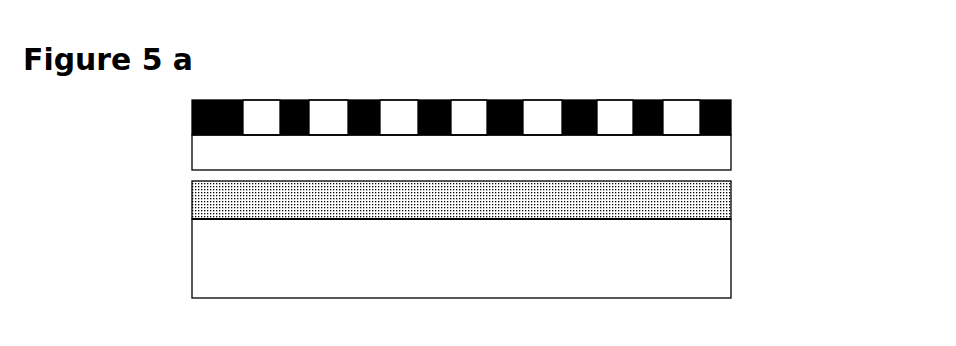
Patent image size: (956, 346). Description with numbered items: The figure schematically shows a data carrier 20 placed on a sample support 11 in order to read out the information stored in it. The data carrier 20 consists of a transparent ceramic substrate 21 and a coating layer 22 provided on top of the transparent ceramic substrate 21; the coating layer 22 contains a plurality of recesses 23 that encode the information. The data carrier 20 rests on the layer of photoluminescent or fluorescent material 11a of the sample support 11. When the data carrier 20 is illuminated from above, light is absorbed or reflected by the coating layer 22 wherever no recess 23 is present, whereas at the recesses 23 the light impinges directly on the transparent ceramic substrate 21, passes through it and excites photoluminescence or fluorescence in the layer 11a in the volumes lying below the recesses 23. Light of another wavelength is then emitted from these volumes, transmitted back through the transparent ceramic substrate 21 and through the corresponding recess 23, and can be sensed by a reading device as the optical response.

The data carrier 20 is at (452, 97).
The transparent ceramic substrate 21 is at (710, 155).
The coating layer 22 is at (732, 113).
The recesses 23 is at (684, 99).
The layer of photoluminescent or fluorescent material 11a is at (713, 196).
The sample support 11 is at (713, 257).